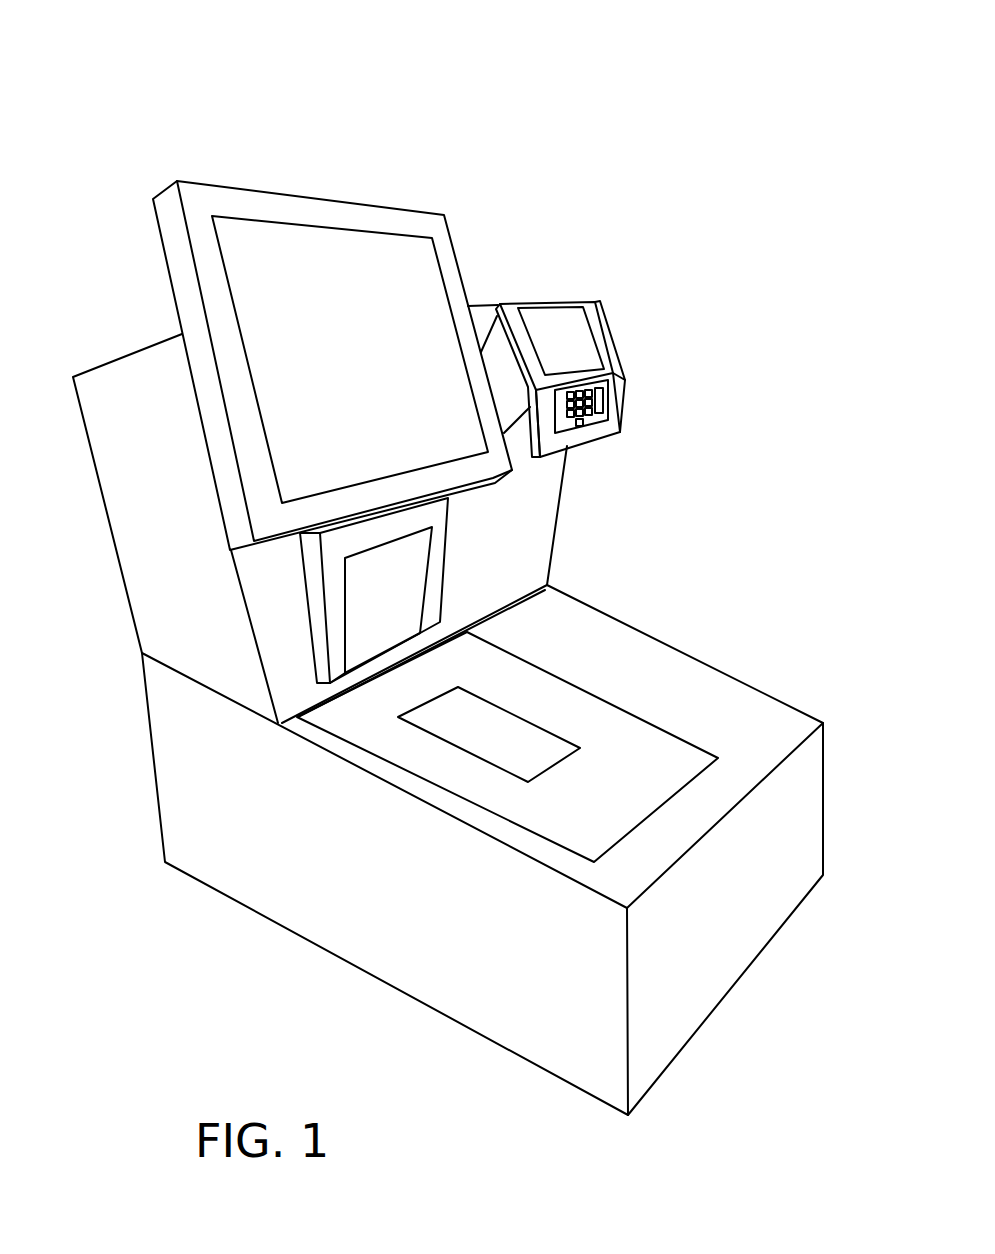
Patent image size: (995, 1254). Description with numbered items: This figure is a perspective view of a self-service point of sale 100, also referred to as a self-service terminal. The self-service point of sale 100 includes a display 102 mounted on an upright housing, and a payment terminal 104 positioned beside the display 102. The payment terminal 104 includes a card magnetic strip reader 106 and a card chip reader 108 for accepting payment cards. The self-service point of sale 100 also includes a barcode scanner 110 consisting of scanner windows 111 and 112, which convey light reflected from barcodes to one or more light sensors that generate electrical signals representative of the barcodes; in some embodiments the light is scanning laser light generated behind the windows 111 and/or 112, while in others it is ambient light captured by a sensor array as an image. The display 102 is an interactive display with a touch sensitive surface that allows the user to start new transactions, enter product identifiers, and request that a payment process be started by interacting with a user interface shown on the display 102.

The self-service point of sale 100 is at (584, 152).
The display 102 is at (392, 248).
The payment terminal 104 is at (599, 366).
The card magnetic strip reader 106 is at (612, 334).
The card chip reader 108 is at (580, 442).
The barcode scanner 110 is at (557, 698).
The scanner window 111 is at (497, 733).
The scanner window 112 is at (410, 585).